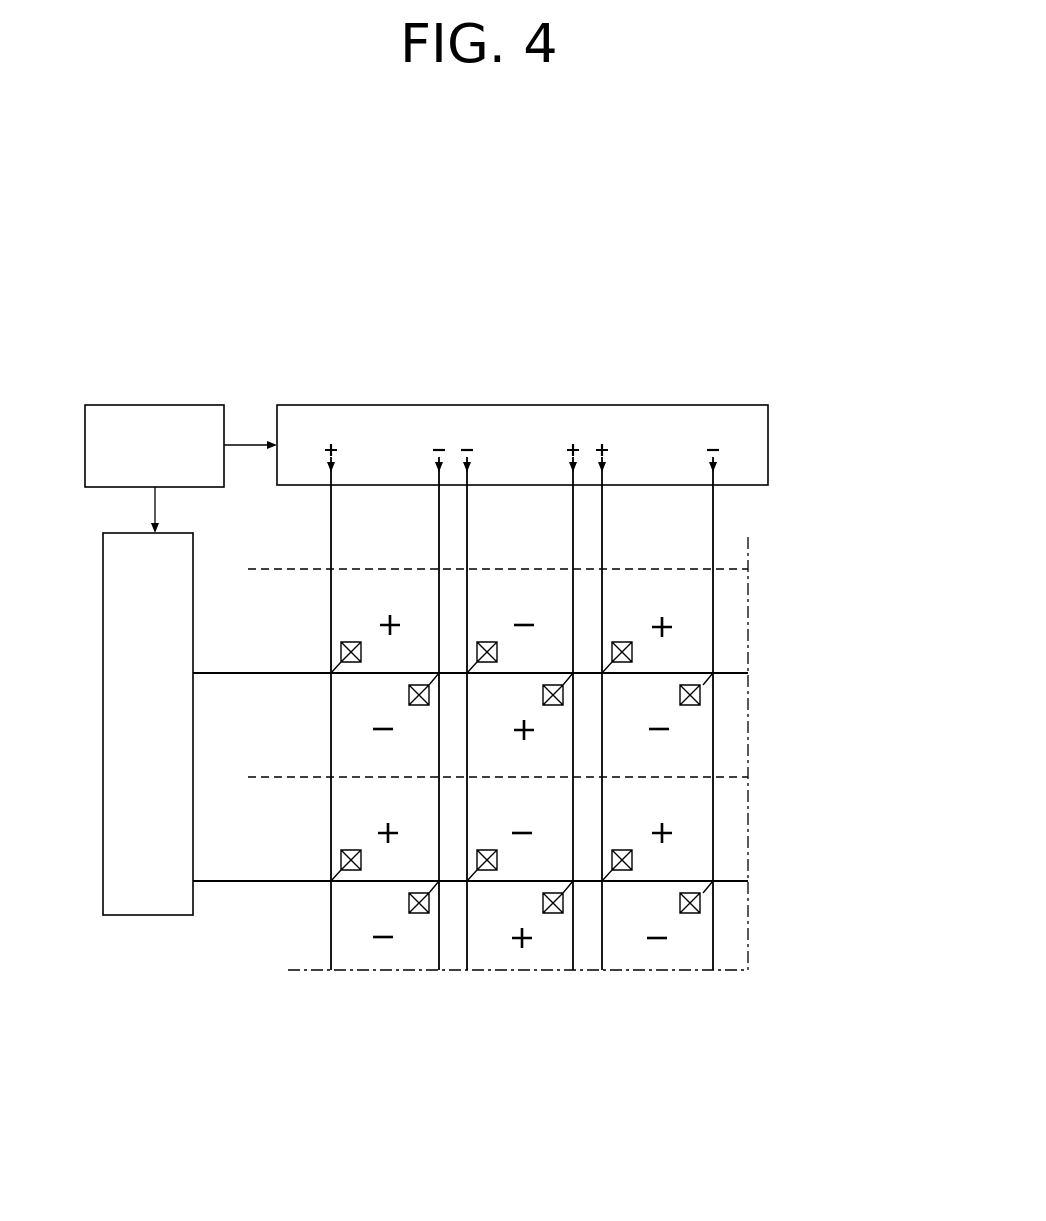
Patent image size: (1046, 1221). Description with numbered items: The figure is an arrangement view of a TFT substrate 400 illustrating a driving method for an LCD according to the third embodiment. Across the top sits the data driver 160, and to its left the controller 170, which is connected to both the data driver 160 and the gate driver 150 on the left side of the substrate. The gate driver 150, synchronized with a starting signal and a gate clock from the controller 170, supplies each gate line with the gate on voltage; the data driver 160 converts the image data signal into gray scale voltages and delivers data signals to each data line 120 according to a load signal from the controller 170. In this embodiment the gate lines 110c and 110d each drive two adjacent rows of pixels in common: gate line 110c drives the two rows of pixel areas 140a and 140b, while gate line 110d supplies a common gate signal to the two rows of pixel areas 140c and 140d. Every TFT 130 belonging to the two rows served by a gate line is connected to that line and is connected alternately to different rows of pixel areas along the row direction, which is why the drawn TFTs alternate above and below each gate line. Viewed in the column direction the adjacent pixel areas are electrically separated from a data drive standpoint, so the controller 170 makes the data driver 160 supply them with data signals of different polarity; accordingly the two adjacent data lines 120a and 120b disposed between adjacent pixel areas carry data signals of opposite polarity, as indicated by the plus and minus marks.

The display device 400 is at (656, 290).
The controller 170 is at (181, 432).
The data driver 160 is at (520, 405).
The gate driver 150 is at (109, 724).
The gate line 110c is at (300, 674).
The gate line 110d is at (297, 882).
The data line 120a is at (329, 971).
The data line 120b is at (437, 971).
The data line 120 is at (571, 971).
The TFT 130 is at (701, 694).
The pixel area 140a is at (700, 632).
The pixel area 140b is at (700, 744).
The pixel area 140c is at (698, 832).
The pixel area 140d is at (698, 945).